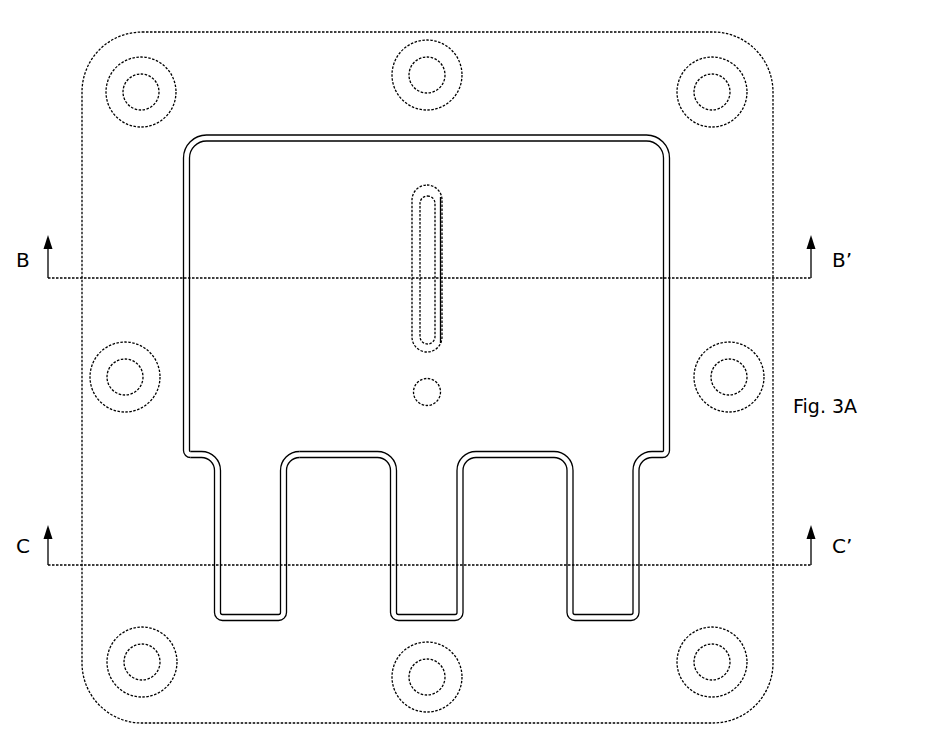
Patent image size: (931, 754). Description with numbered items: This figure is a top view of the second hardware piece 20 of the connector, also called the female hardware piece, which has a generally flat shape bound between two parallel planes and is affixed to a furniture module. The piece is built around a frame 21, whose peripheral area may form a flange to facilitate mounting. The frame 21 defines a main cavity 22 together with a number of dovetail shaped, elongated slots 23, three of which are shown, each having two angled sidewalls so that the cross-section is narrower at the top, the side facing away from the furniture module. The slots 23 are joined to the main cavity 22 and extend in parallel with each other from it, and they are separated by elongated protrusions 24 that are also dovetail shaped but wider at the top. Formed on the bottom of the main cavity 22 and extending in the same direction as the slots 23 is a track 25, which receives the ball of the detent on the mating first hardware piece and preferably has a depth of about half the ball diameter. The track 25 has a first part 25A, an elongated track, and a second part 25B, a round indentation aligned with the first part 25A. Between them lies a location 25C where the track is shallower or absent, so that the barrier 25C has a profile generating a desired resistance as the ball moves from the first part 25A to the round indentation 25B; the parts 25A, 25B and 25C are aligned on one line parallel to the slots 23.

The second hardware piece 20 is at (91, 36).
The frame 21 is at (667, 178).
The main cavity 22 is at (740, 148).
The elongated slot 23 is at (221, 540).
The elongated protrusion 24 is at (480, 492).
The track 25 is at (435, 295).
The first part of track 25A is at (433, 237).
The second part of track 25B is at (466, 382).
The barrier 25C is at (430, 365).